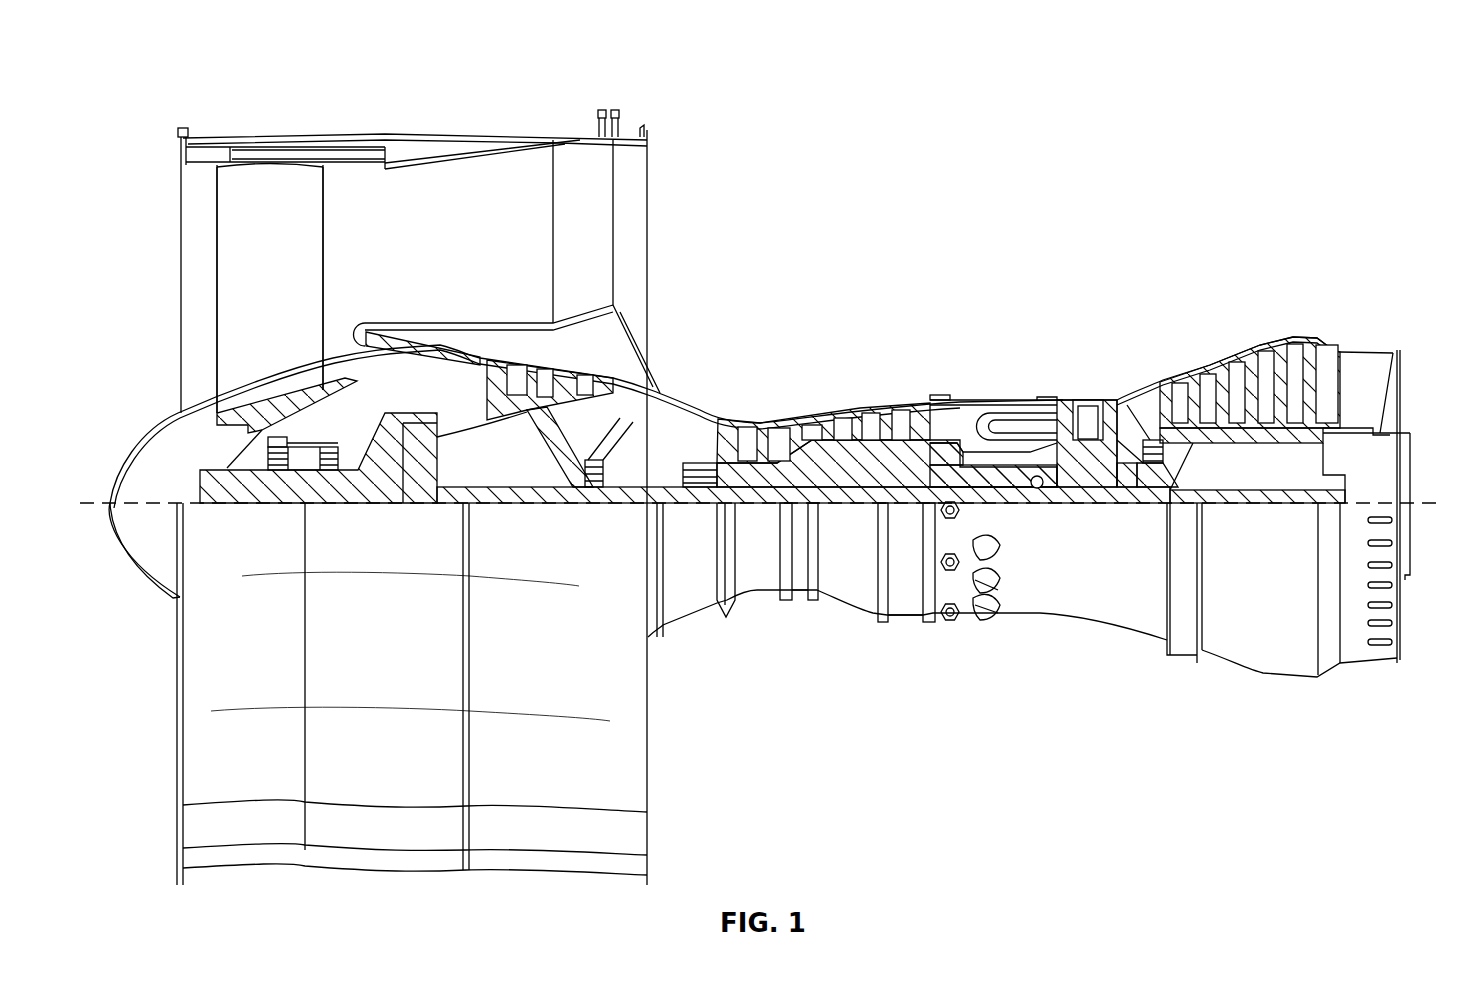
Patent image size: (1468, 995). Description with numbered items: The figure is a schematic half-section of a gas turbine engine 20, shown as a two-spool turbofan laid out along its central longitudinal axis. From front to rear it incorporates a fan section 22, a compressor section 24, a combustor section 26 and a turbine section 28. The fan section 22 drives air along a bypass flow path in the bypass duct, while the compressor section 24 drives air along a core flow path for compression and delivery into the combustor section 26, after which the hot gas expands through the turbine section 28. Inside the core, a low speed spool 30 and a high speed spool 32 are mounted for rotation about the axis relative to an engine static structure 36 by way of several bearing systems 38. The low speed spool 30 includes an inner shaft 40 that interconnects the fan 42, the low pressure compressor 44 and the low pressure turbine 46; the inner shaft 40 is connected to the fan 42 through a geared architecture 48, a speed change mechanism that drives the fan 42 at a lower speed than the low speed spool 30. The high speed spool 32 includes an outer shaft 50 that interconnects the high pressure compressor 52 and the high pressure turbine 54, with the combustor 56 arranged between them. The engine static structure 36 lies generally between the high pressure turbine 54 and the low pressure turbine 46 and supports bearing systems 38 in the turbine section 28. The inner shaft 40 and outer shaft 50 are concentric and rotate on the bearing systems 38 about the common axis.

The gas turbine engine 20 is at (1286, 100).
The fan section 22 is at (289, 130).
The compressor section 24 is at (793, 286).
The combustor section 26 is at (983, 288).
The turbine section 28 is at (1180, 268).
The low speed spool 30 is at (866, 510).
The high speed spool 32 is at (932, 448).
The engine static structure 36 is at (916, 620).
The bearing systems 38 is at (278, 472).
The inner shaft 40 is at (680, 505).
The fan 42 is at (254, 266).
The low pressure compressor 44 is at (560, 365).
The low pressure turbine 46 is at (1253, 365).
The geared architecture 48 is at (425, 482).
The outer shaft 50 is at (1047, 488).
The high pressure compressor 52 is at (828, 470).
The high pressure turbine 54 is at (1087, 398).
The combustor 56 is at (1013, 425).